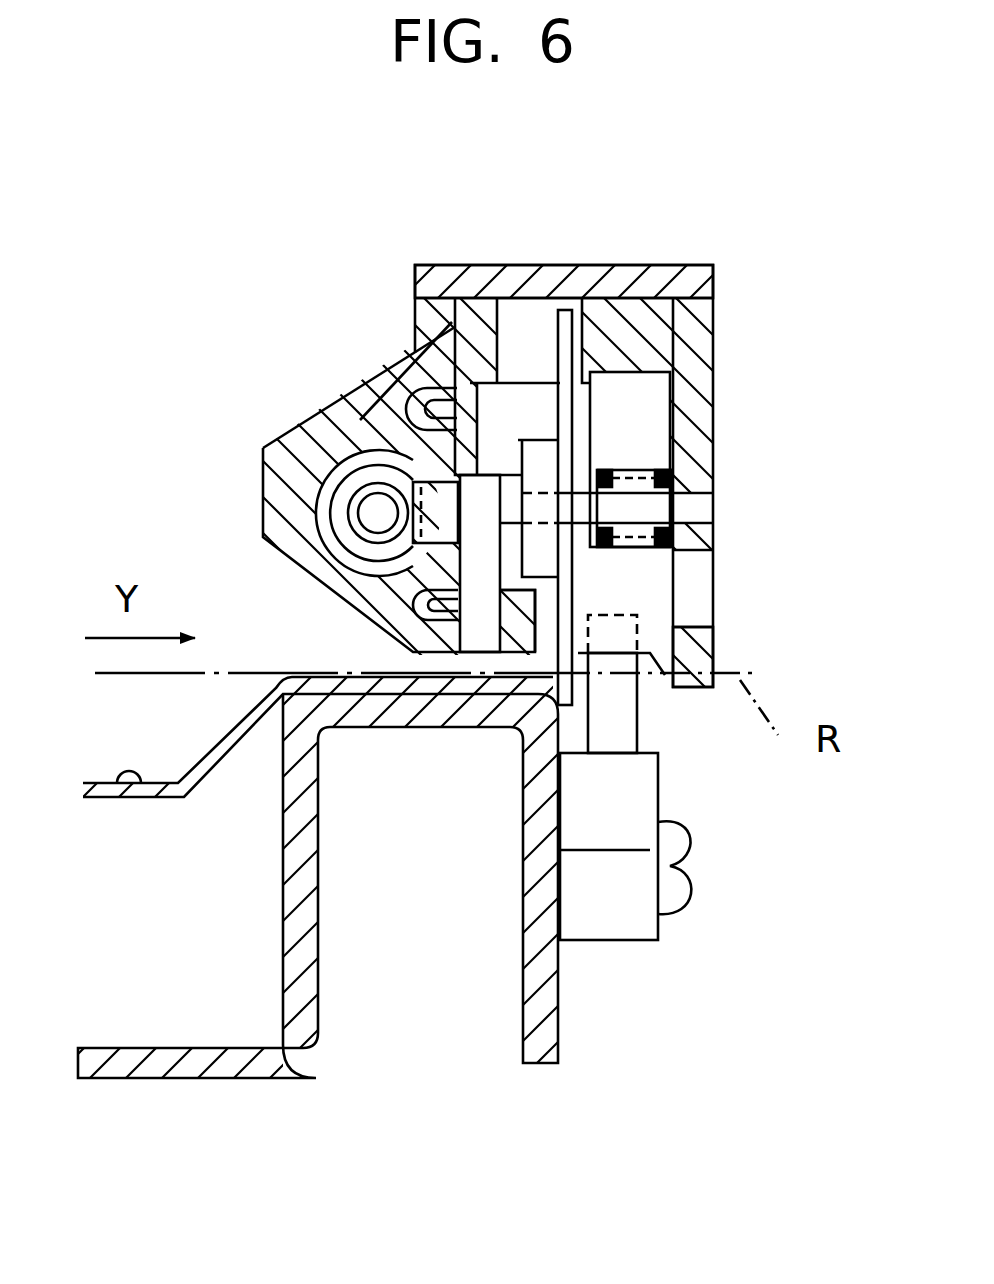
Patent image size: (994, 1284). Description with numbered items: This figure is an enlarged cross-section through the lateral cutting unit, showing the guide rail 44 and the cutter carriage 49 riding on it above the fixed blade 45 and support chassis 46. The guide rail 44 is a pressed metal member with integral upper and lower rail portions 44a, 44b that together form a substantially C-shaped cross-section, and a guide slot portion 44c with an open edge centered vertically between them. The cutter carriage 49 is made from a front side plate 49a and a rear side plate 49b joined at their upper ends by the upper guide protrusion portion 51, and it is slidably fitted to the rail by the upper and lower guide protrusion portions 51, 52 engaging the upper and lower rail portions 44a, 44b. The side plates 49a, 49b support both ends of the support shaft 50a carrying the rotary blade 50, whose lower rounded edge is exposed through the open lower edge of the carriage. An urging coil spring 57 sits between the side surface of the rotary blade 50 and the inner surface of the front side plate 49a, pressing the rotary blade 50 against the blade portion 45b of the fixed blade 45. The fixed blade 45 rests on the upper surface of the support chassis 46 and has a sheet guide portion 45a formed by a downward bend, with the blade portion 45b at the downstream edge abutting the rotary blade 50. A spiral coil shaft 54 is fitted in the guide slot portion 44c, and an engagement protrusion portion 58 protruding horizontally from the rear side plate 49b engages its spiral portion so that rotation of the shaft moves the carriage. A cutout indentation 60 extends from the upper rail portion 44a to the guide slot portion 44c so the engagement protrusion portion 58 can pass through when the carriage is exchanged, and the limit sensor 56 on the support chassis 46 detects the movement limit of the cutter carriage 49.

The guide rail 44 is at (328, 385).
The upper rail portion 44a is at (690, 268).
The lower rail portion 44b is at (482, 598).
The guide slot portion 44c is at (340, 465).
The fixed blade 45 is at (360, 700).
The sheet guide portion 45a is at (115, 783).
The blade portion 45b is at (523, 845).
The support chassis 46 is at (318, 922).
The cutter carriage 49 is at (740, 398).
The front side plate 49a is at (705, 645).
The rear side plate 49b is at (440, 388).
The rotary blade 50 is at (523, 298).
The support shaft 50a is at (700, 507).
The upper guide protrusion portion 51 is at (648, 298).
The lower guide protrusion portion 52 is at (460, 600).
The spiral coil shaft 54 is at (340, 512).
The limit sensor 56 is at (640, 790).
The urging coil spring 57 is at (665, 450).
The engagement protrusion portion 58 is at (437, 552).
The cutout indentation 60 is at (437, 477).